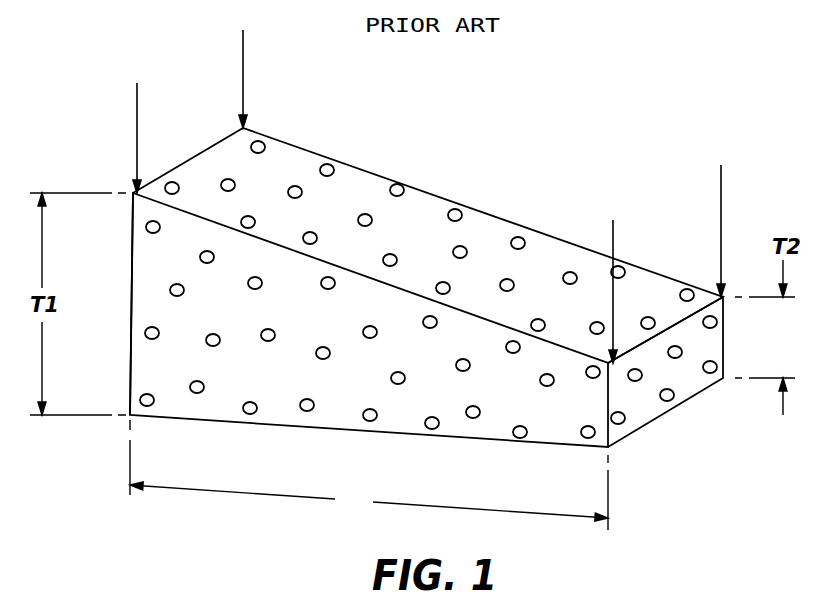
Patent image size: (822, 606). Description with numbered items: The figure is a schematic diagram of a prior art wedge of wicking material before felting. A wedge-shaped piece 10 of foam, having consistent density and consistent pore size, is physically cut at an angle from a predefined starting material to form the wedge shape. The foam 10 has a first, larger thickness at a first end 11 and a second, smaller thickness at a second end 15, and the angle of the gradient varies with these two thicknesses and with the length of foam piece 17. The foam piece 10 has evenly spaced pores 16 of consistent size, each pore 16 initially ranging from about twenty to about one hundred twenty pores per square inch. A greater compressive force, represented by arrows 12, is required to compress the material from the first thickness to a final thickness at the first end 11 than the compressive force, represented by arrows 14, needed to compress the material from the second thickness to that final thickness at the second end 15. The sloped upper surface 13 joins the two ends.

The wedge-shaped piece of foam 10 is at (572, 127).
The first end 11 is at (128, 373).
The arrows representing compressive force 12 is at (243, 70).
The sloped top surface 13 is at (445, 195).
The arrows representing compressive force 14 is at (721, 212).
The second end 15 is at (685, 382).
The pores 16 is at (401, 384).
The length of foam piece 17 is at (369, 475).